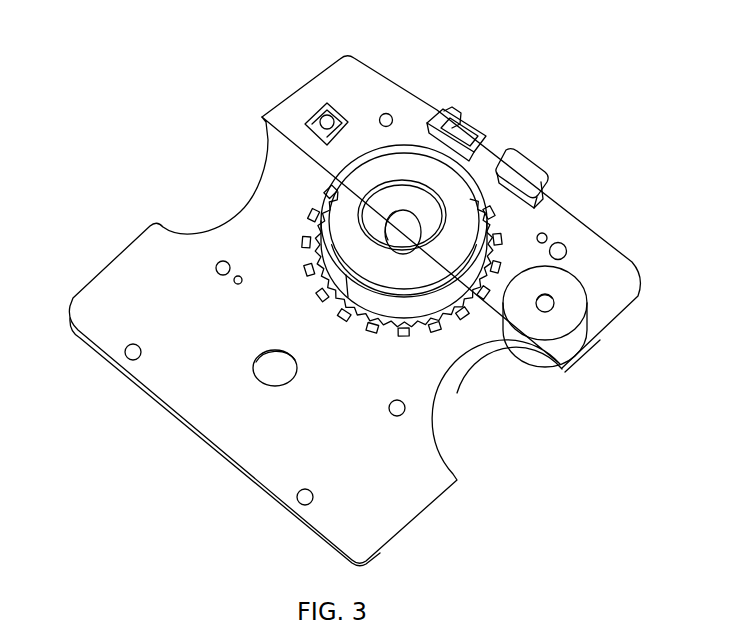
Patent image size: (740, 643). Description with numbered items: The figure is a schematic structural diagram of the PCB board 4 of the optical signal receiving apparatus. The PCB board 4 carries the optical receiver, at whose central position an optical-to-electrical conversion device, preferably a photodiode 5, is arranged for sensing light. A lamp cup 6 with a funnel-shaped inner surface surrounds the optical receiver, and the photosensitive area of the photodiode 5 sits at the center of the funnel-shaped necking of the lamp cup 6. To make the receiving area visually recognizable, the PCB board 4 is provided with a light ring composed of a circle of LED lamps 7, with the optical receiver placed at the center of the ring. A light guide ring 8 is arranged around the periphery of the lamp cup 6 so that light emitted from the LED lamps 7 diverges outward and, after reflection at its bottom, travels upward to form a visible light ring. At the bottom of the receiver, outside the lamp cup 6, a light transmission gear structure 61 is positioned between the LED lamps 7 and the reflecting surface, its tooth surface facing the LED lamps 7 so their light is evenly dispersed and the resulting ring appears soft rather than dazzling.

The PCB board 4 is at (177, 377).
The photodiode 5 is at (405, 227).
The lamp cup 6 is at (398, 168).
The light transmission gear structure 61 is at (438, 332).
The LED lamps 7 is at (497, 232).
The light guide ring 8 is at (333, 182).